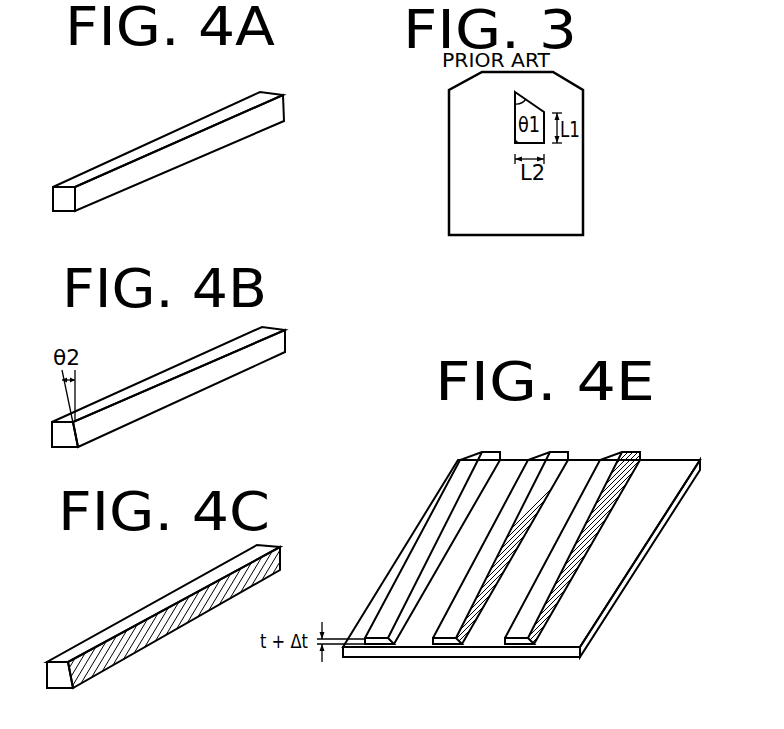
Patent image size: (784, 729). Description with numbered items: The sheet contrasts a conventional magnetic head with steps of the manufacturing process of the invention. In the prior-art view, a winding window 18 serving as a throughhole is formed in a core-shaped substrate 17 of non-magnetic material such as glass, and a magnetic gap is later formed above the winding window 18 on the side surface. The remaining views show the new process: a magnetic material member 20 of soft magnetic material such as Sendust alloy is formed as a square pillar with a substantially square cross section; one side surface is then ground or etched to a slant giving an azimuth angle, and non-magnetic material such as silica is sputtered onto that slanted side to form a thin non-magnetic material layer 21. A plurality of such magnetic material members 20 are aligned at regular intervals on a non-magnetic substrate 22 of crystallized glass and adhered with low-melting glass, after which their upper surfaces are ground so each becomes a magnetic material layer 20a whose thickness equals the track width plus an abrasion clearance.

In FIG. 3, the core-shaped substrate 17 is at (567, 172).
In FIG. 3, the winding window 18 is at (515, 137).
In FIG. 4A, the magnetic material member 20 is at (250, 123).
In FIG. 4B, the magnetic material member 20 is at (243, 360).
In FIG. 4C, the magnetic material member 20 is at (192, 585).
In FIG. 4E, the magnetic material layer 20a is at (377, 632).
In FIG. 4C, the non-magnetic material layer 21 is at (177, 618).
In FIG. 4E, the non-magnetic material layer 21 is at (463, 638).
In FIG. 4E, the substrate 22 is at (610, 575).